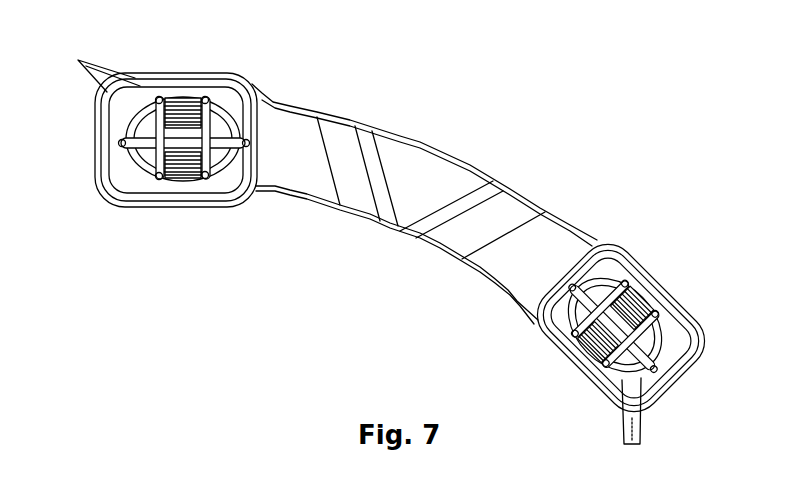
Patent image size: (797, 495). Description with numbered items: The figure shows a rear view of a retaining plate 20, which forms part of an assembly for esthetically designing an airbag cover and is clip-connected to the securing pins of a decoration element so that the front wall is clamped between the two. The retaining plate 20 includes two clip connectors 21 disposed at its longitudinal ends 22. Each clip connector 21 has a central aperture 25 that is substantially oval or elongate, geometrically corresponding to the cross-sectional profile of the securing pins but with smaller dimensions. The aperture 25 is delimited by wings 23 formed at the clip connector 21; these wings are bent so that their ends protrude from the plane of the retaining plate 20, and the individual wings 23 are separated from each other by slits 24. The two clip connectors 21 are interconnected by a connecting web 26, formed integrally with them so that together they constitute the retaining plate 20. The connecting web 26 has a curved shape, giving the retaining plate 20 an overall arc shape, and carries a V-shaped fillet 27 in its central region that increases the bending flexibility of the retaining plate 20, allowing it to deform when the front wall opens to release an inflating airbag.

The retaining plate 20 is at (609, 150).
The clip connector 21 is at (239, 93).
The longitudinal end 22 is at (176, 214).
The wing 23 is at (132, 178).
The slit 24 is at (343, 255).
The central aperture 25 is at (208, 209).
The connecting web 26 is at (300, 182).
The V-shaped fillet 27 is at (428, 193).